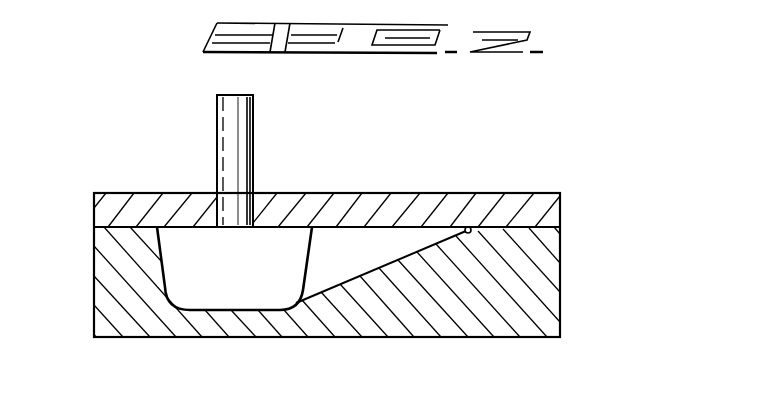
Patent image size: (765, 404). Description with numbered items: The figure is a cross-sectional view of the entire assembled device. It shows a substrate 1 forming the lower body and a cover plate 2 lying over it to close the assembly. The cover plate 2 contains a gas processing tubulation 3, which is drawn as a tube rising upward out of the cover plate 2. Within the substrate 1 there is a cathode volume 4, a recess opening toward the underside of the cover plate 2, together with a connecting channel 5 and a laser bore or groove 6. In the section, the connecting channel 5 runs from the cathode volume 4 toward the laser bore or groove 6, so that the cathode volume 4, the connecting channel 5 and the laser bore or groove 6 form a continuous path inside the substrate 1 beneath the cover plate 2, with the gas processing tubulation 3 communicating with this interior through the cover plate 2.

The substrate 1 is at (557, 265).
The cover plate 2 is at (430, 206).
The gas processing tubulation 3 is at (228, 108).
The cathode volume 4 is at (187, 252).
The connecting channel 5 is at (338, 243).
The laser bore or groove 6 is at (468, 230).